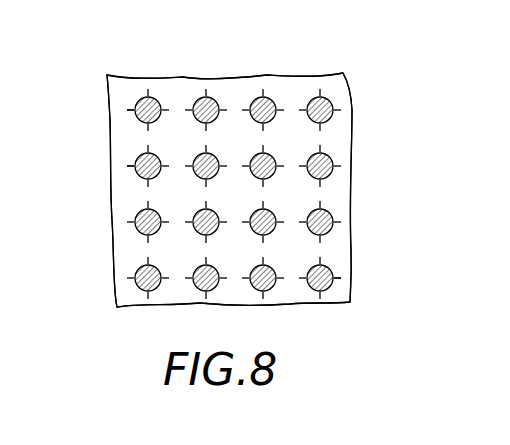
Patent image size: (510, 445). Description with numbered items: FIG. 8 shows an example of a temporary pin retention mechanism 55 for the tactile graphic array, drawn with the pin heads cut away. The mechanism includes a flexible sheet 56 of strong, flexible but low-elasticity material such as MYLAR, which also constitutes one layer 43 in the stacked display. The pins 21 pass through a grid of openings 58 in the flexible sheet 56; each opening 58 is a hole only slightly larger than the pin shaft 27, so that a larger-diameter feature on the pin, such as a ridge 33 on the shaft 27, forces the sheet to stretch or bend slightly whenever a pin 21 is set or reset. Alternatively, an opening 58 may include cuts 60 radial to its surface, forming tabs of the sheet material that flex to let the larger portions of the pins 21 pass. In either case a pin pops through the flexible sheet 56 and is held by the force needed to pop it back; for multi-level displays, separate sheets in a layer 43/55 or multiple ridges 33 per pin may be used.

The pin 21 is at (142, 97).
The shaft 27 is at (140, 119).
The ridge 33 is at (139, 101).
The layer 43 is at (137, 307).
The temporary pin retention mechanism 55 is at (362, 118).
The flexible sheet 56 is at (333, 142).
The opening 58 is at (198, 157).
The cut 60 is at (163, 224).